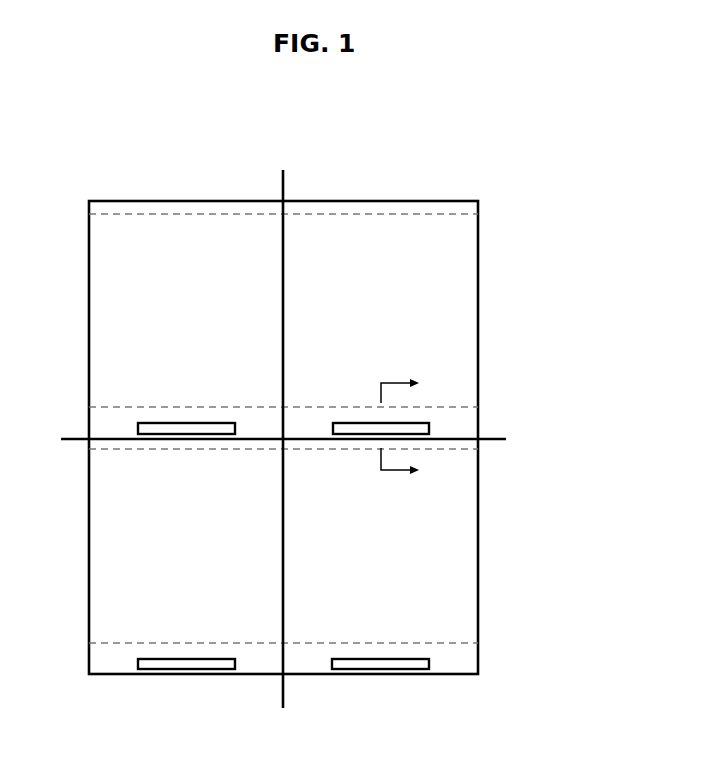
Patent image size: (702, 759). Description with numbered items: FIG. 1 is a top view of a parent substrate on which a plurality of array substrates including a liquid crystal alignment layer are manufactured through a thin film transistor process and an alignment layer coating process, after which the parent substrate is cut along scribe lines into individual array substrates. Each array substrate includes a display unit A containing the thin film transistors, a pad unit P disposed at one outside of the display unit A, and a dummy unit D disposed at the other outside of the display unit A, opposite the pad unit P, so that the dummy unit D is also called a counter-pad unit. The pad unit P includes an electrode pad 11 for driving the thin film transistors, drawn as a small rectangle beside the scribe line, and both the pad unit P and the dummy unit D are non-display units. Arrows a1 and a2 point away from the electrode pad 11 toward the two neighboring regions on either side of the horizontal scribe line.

The dummy unit D is at (426, 208).
The display unit A is at (458, 309).
The pad unit P is at (452, 420).
The electrode pad 11 is at (413, 429).
The first direction a1 is at (400, 378).
The second direction a2 is at (400, 475).